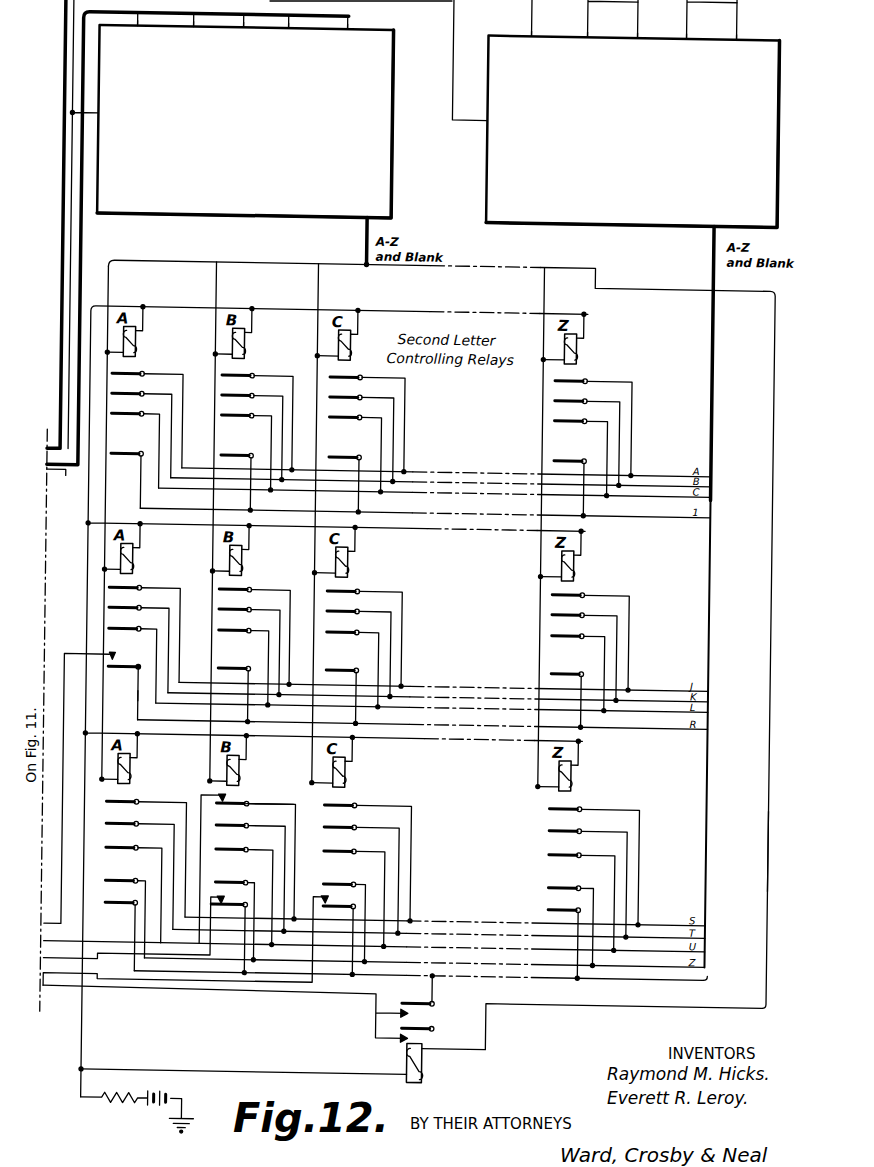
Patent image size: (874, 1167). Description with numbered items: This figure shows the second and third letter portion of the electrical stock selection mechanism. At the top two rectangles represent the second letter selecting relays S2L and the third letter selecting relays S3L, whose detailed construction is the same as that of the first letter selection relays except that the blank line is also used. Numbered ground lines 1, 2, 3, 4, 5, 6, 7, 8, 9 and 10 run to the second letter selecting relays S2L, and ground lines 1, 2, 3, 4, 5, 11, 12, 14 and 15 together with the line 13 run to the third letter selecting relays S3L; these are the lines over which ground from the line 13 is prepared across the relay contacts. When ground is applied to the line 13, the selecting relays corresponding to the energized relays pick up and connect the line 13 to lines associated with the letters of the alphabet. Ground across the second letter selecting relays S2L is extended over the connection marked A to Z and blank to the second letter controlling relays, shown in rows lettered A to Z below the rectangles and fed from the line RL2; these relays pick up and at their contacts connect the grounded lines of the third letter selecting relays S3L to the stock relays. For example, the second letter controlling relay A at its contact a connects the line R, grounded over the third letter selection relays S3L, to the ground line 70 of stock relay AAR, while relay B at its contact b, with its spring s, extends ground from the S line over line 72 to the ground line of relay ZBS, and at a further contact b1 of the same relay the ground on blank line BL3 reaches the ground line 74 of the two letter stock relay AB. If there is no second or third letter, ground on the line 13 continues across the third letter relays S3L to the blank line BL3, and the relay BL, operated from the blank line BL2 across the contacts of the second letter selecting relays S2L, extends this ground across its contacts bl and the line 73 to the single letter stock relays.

The ground line 1 is at (334, 36).
The ground line 2 is at (393, 37).
The ground line 3 is at (442, 37).
The ground line 4 is at (488, 38).
The ground line 5 is at (543, 39).
The ground line 6 is at (143, 20).
The ground line 7 is at (199, 21).
The ground line 8 is at (249, 21).
The ground line 9 is at (294, 22).
The ground line 10 is at (356, 23).
The ground line 11 is at (541, 18).
The ground line 12 is at (613, 19).
The line 13 is at (60, 484).
The ground line 14 is at (712, 20).
The ground line 15 is at (746, 20).
The ground line 70 is at (52, 924).
The line 72 is at (52, 958).
The line 73 is at (57, 987).
The ground line 74 is at (52, 942).
The second letter selecting relays S2L is at (245, 121).
The third letter selecting relays S3L is at (632, 132).
The relay RL2 is at (597, 273).
The relay BL is at (432, 1052).
The blank line BL2 is at (527, 1006).
The blank line BL3 is at (669, 974).
The contact bl is at (418, 1016).
The contact a is at (127, 665).
The contact b is at (248, 802).
The contact b1 is at (232, 895).
The spring s is at (287, 802).
The line R is at (141, 692).